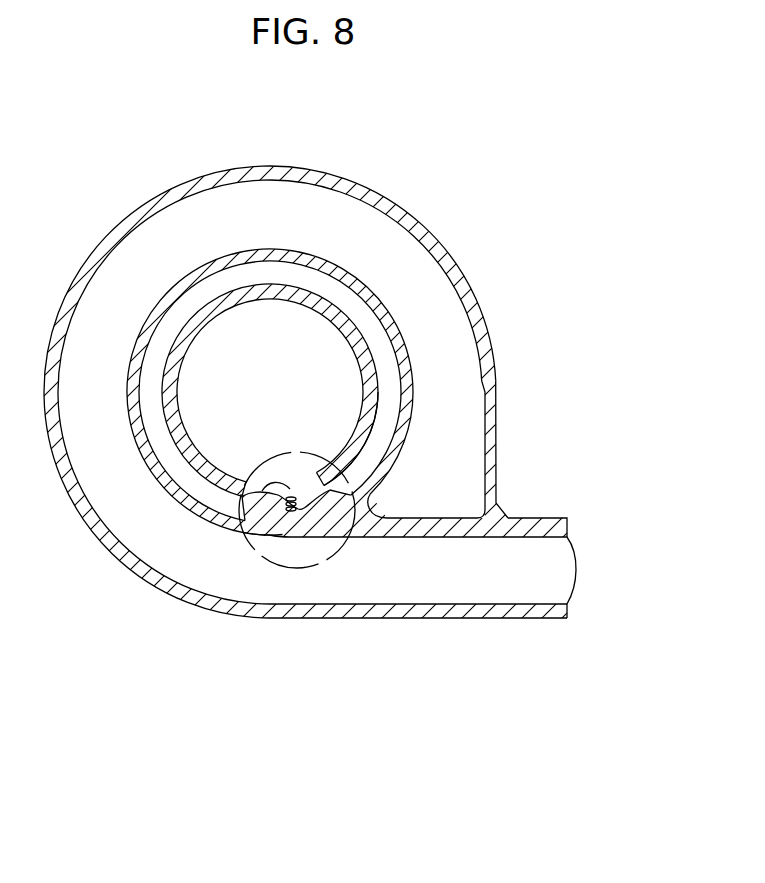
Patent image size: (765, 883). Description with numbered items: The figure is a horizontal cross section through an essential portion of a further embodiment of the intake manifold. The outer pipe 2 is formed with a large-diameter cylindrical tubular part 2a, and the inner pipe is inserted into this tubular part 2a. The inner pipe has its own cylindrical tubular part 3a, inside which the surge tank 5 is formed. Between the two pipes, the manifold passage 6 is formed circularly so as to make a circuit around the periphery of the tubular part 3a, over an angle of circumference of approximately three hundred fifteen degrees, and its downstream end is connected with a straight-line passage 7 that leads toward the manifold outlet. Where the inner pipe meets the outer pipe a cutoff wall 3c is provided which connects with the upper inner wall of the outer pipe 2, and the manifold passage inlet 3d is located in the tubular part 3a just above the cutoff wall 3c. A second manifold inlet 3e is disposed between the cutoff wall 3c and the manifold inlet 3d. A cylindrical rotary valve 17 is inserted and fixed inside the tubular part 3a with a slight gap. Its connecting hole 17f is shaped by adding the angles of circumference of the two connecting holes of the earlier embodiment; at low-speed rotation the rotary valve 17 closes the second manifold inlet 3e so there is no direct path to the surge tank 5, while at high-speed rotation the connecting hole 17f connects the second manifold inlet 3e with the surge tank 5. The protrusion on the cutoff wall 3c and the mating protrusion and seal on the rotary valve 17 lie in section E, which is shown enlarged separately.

The outer pipe 2 is at (382, 372).
The cylindrical tubular part 2a is at (361, 184).
The cylindrical tubular part 3a is at (358, 454).
The cutoff wall 3c is at (397, 537).
The manifold passage inlet 3d is at (400, 448).
The second manifold inlet 3e is at (226, 524).
The surge tank 5 is at (261, 400).
The manifold passage 6 is at (259, 229).
The straight-line passage 7 is at (436, 585).
The rotary valve 17 is at (358, 392).
The connecting hole 17f is at (373, 380).
The section E is at (308, 570).